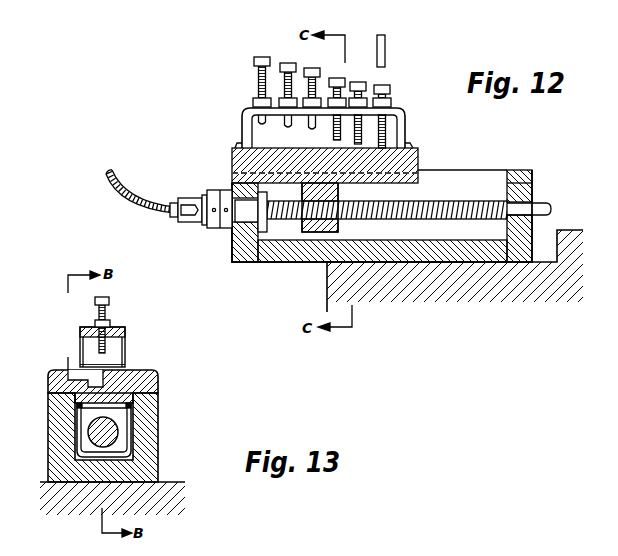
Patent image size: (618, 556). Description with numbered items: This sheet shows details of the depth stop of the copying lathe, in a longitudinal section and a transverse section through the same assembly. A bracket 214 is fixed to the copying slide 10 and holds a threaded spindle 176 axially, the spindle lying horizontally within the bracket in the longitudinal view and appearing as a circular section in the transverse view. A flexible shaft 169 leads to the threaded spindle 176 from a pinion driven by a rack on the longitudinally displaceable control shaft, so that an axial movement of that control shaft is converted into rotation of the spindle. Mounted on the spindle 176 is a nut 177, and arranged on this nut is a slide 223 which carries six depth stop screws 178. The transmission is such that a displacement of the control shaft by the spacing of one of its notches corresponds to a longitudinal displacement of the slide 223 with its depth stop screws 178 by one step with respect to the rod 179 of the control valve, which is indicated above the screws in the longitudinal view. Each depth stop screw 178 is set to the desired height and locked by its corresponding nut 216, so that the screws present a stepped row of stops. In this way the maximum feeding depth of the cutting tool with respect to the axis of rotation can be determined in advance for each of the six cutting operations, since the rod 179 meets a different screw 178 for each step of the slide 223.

In FIG. 12, the copying slide 10 is at (493, 280).
In FIG. 13, the copying slide 10 is at (158, 495).
In FIG. 12, the flexible shaft 169 is at (121, 180).
In FIG. 12, the threaded spindle 176 is at (462, 202).
In FIG. 13, the threaded spindle 176 is at (117, 425).
In FIG. 12, the nut 177 is at (310, 233).
In FIG. 13, the nut 177 is at (122, 443).
In FIG. 12, the depth stop screws 178 is at (303, 68).
In FIG. 13, the depth stop screws 178 is at (108, 300).
In FIG. 12, the rod 179 is at (386, 52).
In FIG. 12, the bracket 214 is at (255, 250).
In FIG. 13, the bracket 214 is at (150, 463).
In FIG. 12, the nuts 216 is at (256, 102).
In FIG. 13, the nuts 216 is at (112, 322).
In FIG. 12, the slide 223 is at (247, 125).
In FIG. 13, the slide 223 is at (157, 373).